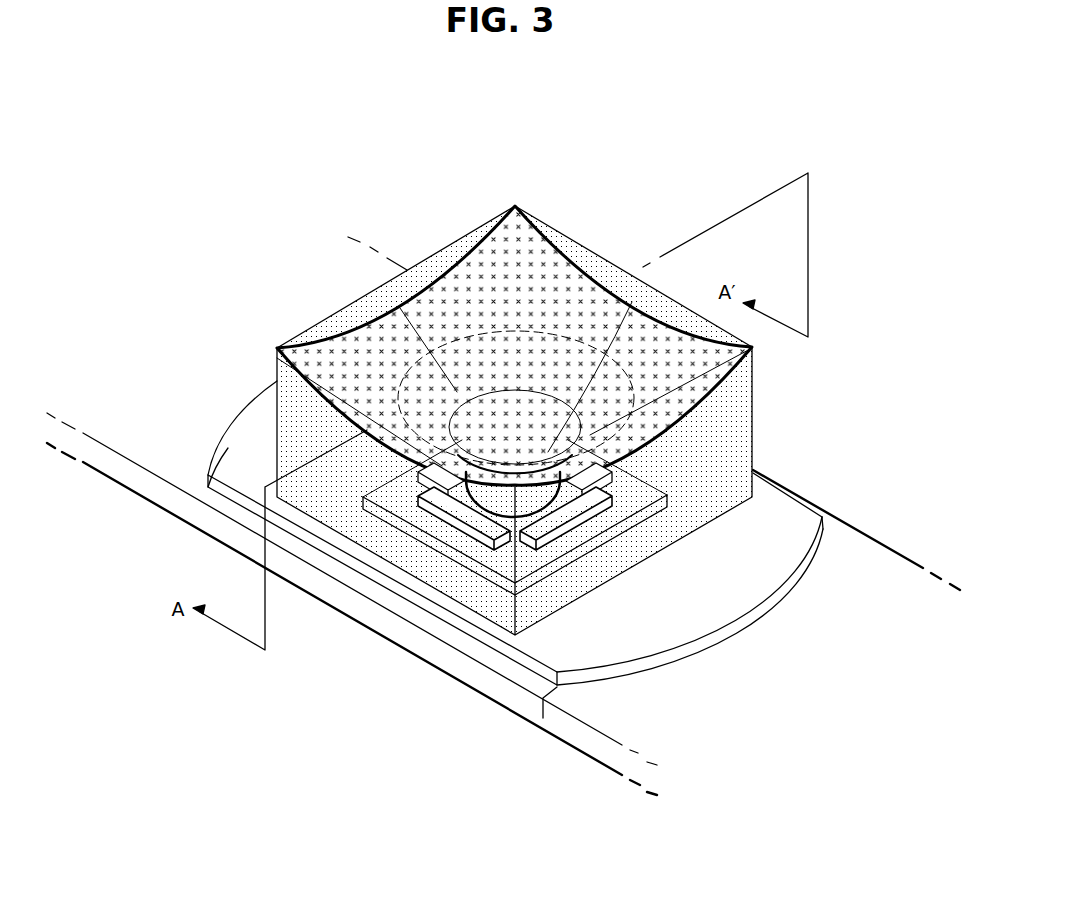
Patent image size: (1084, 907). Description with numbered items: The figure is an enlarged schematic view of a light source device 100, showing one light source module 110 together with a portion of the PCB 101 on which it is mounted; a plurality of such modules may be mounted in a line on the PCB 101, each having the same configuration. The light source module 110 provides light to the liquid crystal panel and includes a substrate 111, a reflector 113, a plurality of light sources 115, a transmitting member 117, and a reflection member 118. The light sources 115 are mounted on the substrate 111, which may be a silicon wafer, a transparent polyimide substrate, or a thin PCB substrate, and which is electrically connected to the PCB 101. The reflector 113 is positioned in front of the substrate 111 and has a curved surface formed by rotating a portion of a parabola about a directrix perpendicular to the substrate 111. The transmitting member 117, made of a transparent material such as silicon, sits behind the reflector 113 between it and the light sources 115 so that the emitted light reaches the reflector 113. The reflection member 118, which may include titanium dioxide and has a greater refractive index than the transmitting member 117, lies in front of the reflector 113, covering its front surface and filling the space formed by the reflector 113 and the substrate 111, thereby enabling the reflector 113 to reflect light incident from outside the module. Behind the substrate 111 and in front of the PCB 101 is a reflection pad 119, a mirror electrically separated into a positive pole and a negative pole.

The light source device 100 is at (430, 122).
The PCB 101 is at (163, 490).
The light source module 110 is at (542, 389).
The substrate 111 is at (483, 557).
The reflector 113 is at (742, 390).
The light sources 115 is at (466, 512).
The transmitting member 117 is at (740, 451).
The reflection member 118 is at (609, 278).
The reflection pad 119 is at (557, 657).